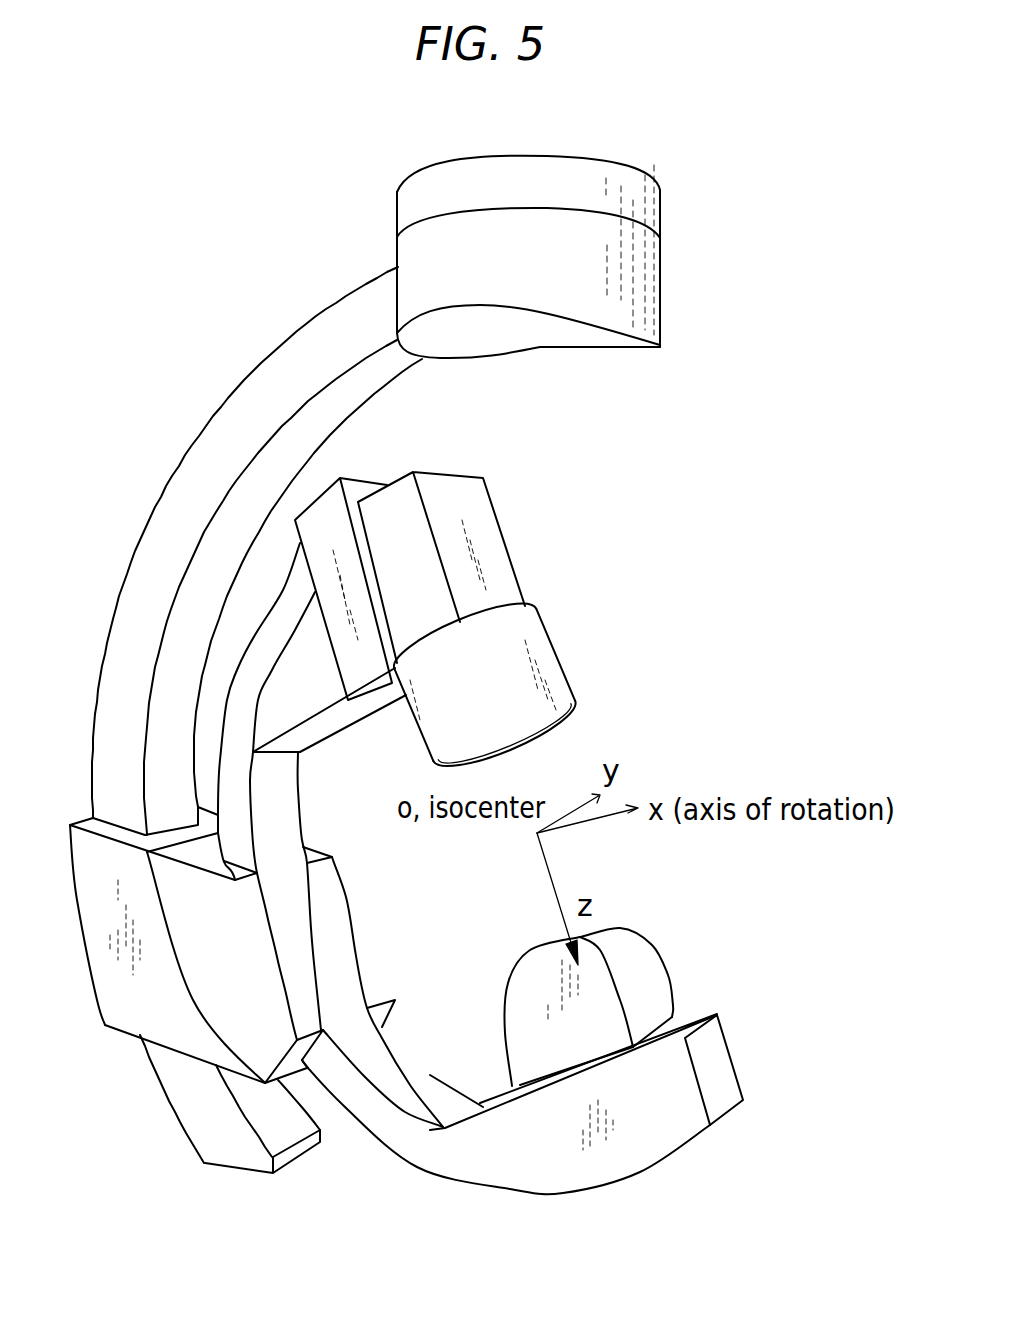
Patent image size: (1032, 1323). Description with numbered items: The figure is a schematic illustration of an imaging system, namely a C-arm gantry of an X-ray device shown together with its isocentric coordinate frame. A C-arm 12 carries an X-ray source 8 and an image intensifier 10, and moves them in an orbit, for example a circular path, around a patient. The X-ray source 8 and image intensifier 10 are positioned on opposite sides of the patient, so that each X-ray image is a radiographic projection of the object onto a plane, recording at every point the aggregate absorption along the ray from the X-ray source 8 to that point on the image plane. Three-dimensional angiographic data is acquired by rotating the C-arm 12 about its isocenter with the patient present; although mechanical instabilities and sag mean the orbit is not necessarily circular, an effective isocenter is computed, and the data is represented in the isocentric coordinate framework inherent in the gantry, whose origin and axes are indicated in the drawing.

The X-ray source 8 is at (652, 960).
The image intensifier 10 is at (738, 1053).
The C-arm 12 is at (560, 657).